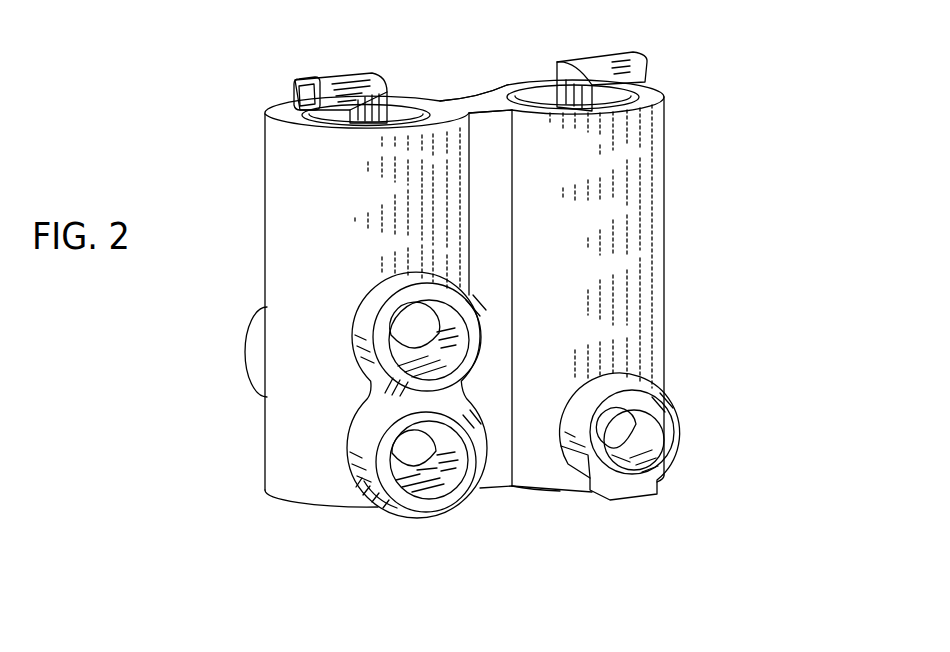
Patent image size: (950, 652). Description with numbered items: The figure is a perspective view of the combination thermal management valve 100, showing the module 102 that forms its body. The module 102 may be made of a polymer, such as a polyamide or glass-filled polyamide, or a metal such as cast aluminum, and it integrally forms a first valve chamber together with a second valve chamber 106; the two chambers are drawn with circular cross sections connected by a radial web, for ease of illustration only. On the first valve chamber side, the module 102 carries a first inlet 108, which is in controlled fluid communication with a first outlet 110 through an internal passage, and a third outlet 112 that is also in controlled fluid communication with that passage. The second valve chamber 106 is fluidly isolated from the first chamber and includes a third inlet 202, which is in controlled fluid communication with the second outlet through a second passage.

The combination thermal management valve 100 is at (714, 49).
The module 102 is at (457, 76).
The second valve chamber 106 is at (663, 282).
The first inlet 108 is at (250, 340).
The first outlet 110 is at (500, 457).
The third outlet 112 is at (447, 492).
The third inlet 202 is at (645, 476).